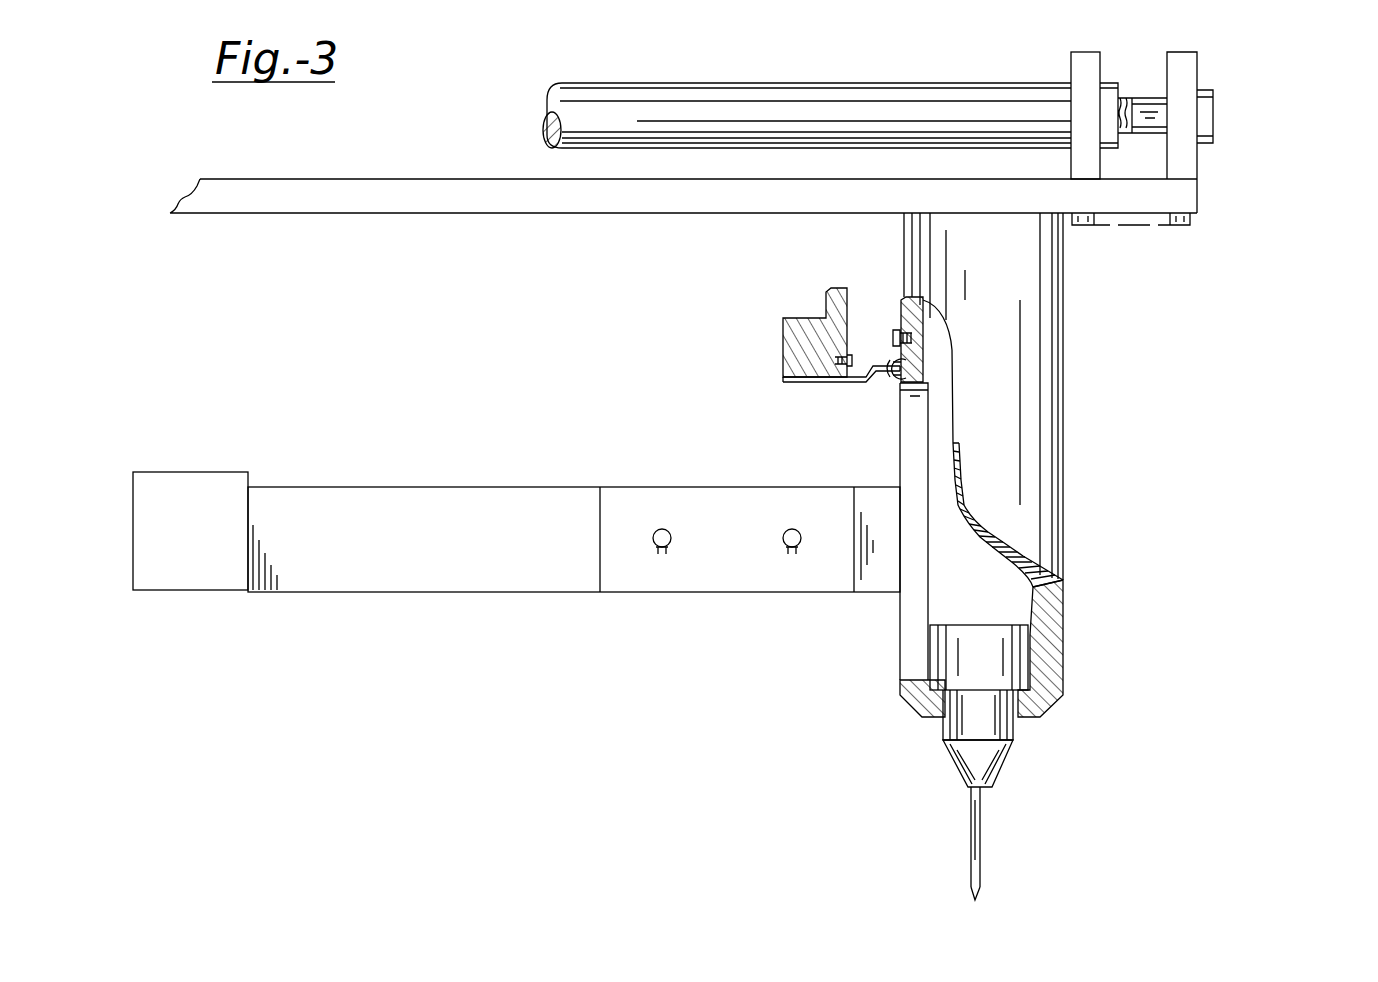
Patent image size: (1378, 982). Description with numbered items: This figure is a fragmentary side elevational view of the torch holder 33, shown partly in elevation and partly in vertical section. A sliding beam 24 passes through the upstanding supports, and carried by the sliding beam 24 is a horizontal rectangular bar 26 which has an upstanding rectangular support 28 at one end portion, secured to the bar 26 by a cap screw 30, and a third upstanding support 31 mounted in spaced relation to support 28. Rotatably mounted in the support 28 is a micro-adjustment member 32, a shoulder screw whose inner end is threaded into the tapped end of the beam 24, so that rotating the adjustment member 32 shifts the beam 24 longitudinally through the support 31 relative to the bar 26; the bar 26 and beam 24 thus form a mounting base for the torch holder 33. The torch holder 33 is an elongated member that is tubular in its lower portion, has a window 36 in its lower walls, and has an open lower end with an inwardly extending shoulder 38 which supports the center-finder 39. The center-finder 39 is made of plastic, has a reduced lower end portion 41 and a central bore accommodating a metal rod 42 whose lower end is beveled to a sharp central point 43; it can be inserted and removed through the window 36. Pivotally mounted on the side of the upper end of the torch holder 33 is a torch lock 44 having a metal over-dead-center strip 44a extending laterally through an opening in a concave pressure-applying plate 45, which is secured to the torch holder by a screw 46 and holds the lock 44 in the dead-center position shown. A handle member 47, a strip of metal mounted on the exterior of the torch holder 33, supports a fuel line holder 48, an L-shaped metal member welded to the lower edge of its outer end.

The sliding beam 24 is at (815, 79).
The rectangular bar 26 is at (474, 177).
The upstanding rectangular support 28 is at (1198, 70).
The cap screw 30 is at (1177, 228).
The third upstanding support 31 is at (1070, 70).
The micro-adjustment member 32 is at (1220, 127).
The torch holder 33 is at (1068, 410).
The window 36 is at (908, 455).
The inwardly extending shoulder 38 is at (930, 678).
The center-finder 39 is at (964, 670).
The reduced lower end portion 41 is at (1015, 735).
The metal rod 42 is at (982, 845).
The sharp central point 43 is at (975, 900).
The torch lock 44 is at (783, 368).
The over-dead-center strip 44a is at (870, 382).
The concave pressure-applying plate 45 is at (898, 330).
The screw 46 is at (898, 338).
The handle member 47 is at (378, 592).
The fuel line holder 48 is at (210, 472).